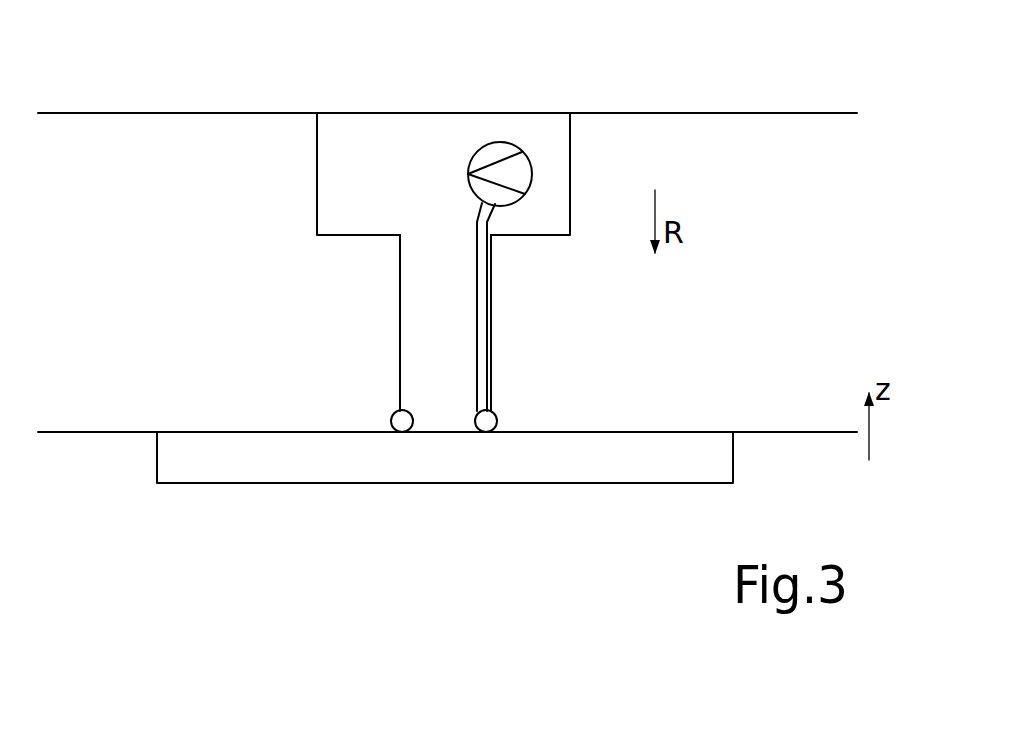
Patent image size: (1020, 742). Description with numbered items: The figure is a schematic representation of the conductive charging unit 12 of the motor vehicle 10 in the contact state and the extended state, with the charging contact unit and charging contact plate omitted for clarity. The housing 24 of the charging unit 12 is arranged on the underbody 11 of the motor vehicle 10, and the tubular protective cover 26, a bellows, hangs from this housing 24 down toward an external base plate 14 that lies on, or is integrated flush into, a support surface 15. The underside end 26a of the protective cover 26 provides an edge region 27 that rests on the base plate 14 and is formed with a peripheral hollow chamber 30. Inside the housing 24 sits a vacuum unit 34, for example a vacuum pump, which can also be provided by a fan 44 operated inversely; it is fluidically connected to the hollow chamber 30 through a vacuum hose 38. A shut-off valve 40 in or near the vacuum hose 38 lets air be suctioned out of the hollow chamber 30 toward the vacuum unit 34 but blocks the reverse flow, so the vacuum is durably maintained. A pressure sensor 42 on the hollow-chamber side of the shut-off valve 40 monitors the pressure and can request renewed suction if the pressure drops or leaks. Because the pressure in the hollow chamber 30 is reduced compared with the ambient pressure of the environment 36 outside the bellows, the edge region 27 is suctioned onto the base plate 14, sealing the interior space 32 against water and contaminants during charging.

The motor vehicle 10 is at (447, 56).
The underbody 11 is at (654, 113).
The conductive charging unit 12 is at (306, 262).
The base plate 14 is at (447, 415).
The support surface 15 is at (82, 432).
The housing 24 is at (377, 262).
The protective cover 26 is at (395, 273).
The underside end 26a is at (455, 437).
The edge region 27 is at (439, 485).
The hollow chamber 30 is at (402, 427).
The interior space 32 is at (438, 326).
The vacuum unit 34 is at (586, 173).
The fan 44 is at (537, 170).
The environment 36 is at (772, 297).
The vacuum hose 38 is at (547, 308).
The shut-off valve 40 is at (486, 223).
The pressure sensor 42 is at (494, 413).